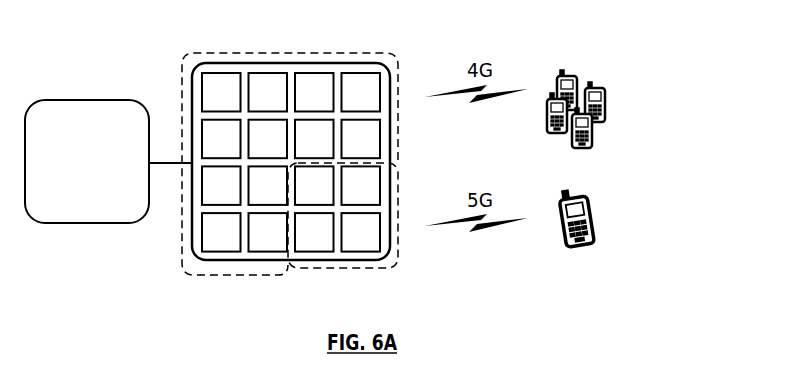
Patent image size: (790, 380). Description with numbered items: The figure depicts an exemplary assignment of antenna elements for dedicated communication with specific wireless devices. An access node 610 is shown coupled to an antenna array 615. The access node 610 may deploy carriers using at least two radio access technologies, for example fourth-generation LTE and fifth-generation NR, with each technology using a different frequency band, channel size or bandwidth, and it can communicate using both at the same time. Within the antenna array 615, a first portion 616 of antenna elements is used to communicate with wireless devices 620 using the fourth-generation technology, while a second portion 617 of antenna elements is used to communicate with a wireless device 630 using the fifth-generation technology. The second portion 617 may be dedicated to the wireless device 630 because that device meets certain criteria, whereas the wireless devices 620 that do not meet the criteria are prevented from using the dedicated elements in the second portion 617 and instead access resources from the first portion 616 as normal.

The access node 610 is at (105, 175).
The antenna array 615 is at (292, 63).
The first portion of antenna elements 616 is at (186, 60).
The second portion of antenna elements 617 is at (347, 268).
The wireless devices 620 is at (632, 84).
The wireless device 630 is at (577, 203).